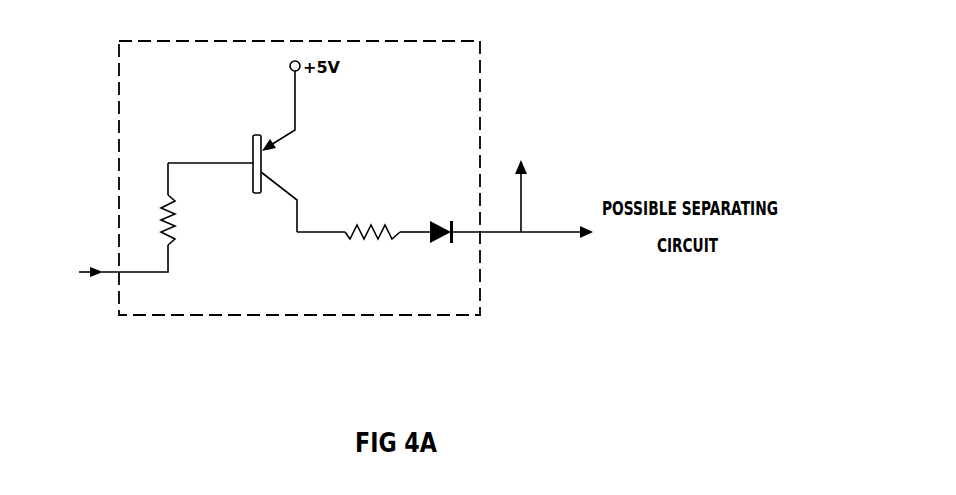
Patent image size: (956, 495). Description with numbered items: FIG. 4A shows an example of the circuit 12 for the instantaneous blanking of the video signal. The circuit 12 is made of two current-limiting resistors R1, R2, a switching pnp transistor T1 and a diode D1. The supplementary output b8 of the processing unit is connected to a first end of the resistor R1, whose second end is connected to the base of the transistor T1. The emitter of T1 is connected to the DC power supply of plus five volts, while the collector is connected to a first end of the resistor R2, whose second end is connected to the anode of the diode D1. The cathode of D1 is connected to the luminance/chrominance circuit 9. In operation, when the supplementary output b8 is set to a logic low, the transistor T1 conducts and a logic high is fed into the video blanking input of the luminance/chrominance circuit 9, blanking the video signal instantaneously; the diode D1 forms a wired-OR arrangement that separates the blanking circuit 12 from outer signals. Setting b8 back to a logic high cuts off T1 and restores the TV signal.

The circuit for instantaneous blanking of the video signal 12 is at (481, 303).
The luminance/chrominance circuit 9 is at (651, 181).
The switching pnp transistor T1 is at (275, 151).
The current-limiting resistor R1 is at (153, 217).
The current-limiting resistor R2 is at (363, 219).
The diode D1 is at (511, 217).
The supplementary output b8 is at (77, 272).